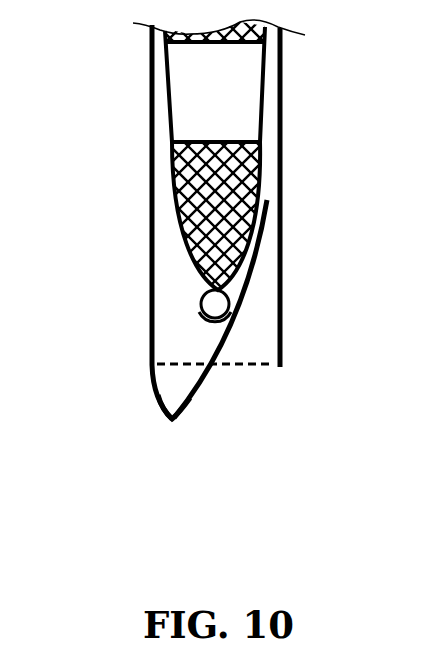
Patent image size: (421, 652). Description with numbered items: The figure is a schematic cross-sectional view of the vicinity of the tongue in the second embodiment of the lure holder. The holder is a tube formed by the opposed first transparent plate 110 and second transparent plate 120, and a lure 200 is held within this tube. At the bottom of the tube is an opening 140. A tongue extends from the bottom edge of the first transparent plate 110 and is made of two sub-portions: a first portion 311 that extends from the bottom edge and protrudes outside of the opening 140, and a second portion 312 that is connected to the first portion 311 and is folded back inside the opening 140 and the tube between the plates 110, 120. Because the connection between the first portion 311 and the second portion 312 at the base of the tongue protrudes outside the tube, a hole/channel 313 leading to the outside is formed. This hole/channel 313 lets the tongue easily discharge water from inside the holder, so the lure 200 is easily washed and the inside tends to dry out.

The first transparent plate 110 is at (150, 198).
The second transparent plate 120 is at (283, 158).
The lure 200 is at (187, 88).
The opening 140 is at (232, 381).
The first portion 311 is at (157, 410).
The second portion 312 is at (240, 323).
The hole/channel 313 is at (171, 389).